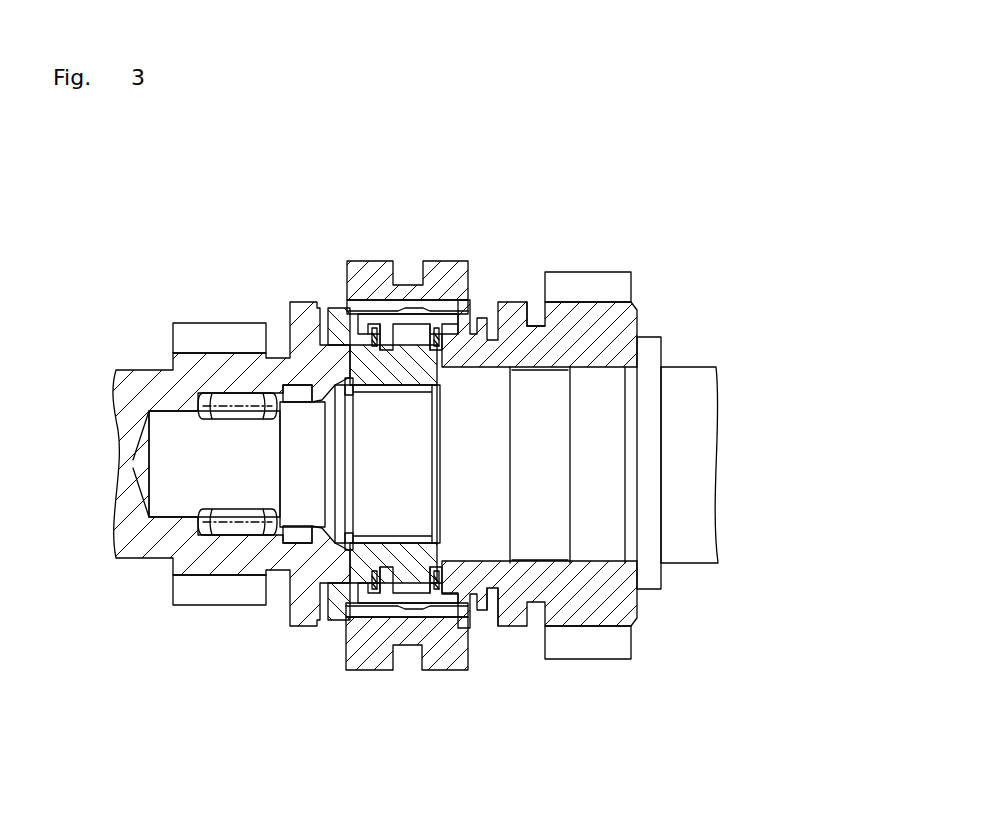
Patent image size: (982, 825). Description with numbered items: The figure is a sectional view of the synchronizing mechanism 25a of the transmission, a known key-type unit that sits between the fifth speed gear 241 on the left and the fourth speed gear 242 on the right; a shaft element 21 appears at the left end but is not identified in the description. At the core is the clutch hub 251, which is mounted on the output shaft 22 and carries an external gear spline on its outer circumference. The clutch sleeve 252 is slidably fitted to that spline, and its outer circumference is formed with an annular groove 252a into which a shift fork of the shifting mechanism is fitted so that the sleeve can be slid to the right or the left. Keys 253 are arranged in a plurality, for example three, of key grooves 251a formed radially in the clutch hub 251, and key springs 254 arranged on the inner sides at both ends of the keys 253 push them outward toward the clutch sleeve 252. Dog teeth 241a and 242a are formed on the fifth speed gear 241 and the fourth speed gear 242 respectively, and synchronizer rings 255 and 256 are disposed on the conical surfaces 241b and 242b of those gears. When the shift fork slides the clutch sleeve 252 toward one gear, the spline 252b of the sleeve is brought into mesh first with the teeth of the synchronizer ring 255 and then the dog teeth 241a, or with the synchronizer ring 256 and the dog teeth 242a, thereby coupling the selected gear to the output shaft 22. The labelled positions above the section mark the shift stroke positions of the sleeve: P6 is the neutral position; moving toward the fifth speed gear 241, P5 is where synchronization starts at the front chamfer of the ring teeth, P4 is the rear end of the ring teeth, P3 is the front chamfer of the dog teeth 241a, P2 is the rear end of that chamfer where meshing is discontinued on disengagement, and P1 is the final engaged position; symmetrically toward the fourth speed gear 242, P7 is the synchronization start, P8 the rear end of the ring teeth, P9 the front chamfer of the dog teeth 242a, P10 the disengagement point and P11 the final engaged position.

The first shaft 21 is at (130, 403).
The output shaft 22 is at (705, 417).
The fifth speed gear 241 is at (190, 330).
The dog teeth 241a is at (290, 305).
The conical surface 241b is at (345, 575).
The fourth speed gear 242 is at (597, 280).
The dog teeth 242a is at (535, 322).
The conical surface 242b is at (493, 606).
The clutch hub 251 is at (385, 660).
The key grooves 251a is at (455, 325).
The clutch sleeve 252 is at (372, 262).
The annular groove 252a is at (418, 300).
The spline 252b is at (352, 665).
The keys 253 is at (387, 327).
The key springs 254 is at (380, 610).
The synchronizer ring 255 is at (345, 615).
The synchronizer ring 256 is at (460, 630).
The synchronizing mechanism 25a is at (430, 248).
The shift stroke position P1 is at (289, 302).
The shift stroke position P2 is at (316, 302).
The shift stroke position P3 is at (320, 345).
The shift stroke position P4 is at (330, 308).
The shift stroke position P5 is at (339, 308).
The shift stroke position P6 is at (348, 261).
The shift stroke position P7 is at (478, 318).
The shift stroke position P8 is at (487, 340).
The shift stroke position P9 is at (498, 302).
The shift stroke position P10 is at (500, 302).
The shift stroke position P11 is at (527, 326).